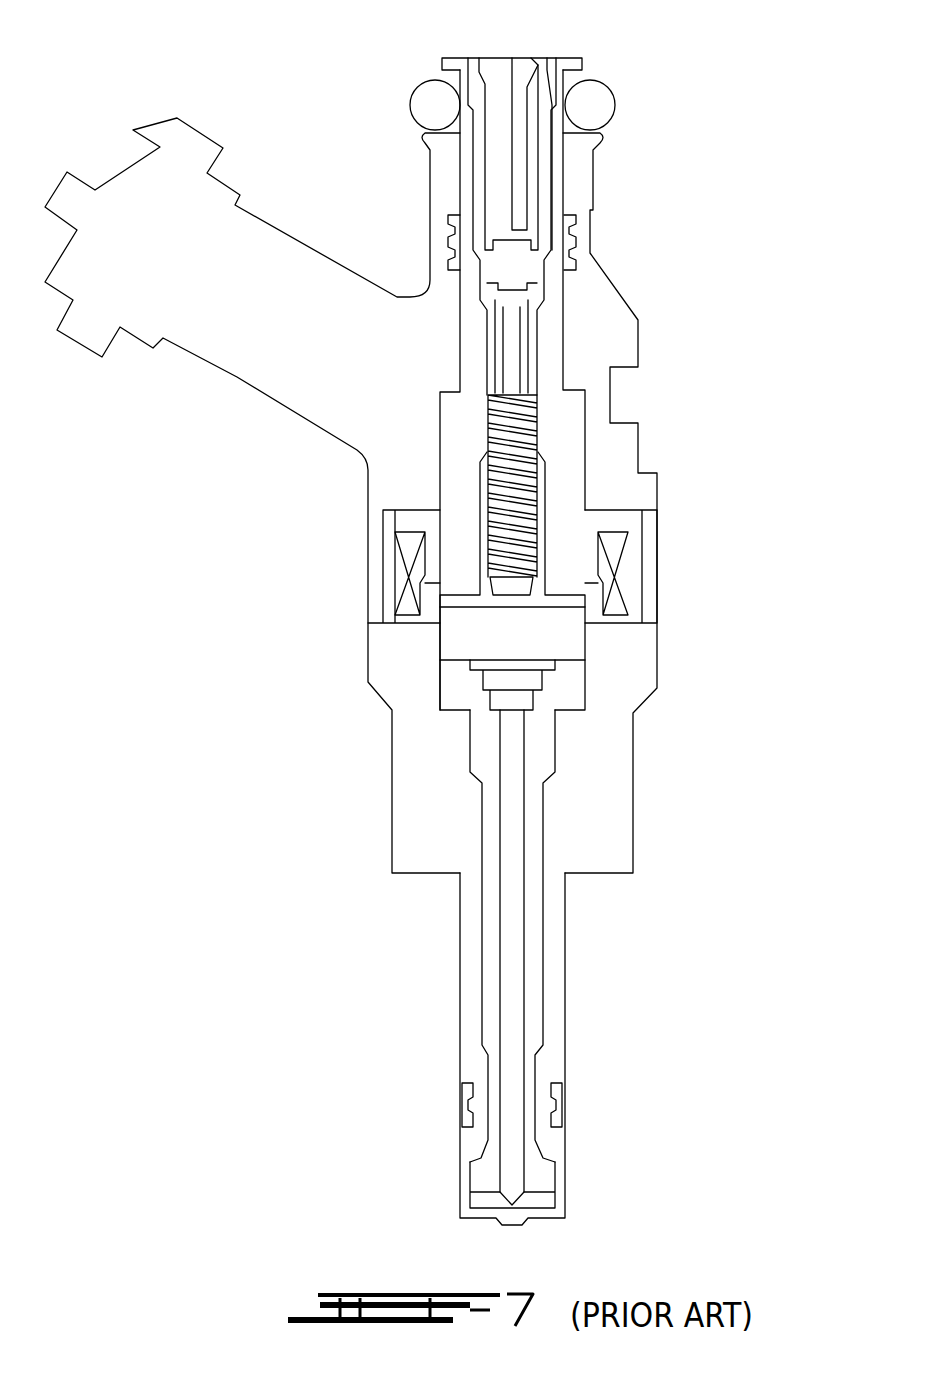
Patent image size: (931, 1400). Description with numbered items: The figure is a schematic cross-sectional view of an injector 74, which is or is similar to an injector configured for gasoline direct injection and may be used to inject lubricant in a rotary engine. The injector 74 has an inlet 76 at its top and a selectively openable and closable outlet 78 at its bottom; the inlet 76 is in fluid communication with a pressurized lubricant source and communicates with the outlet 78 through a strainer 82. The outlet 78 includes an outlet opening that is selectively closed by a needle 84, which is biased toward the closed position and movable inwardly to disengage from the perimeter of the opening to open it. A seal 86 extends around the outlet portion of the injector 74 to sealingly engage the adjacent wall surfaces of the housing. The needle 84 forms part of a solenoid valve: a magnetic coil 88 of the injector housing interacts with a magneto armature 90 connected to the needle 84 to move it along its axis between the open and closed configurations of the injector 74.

The injector 74 is at (692, 190).
The inlet 76 is at (513, 58).
The outlet 78 is at (568, 1068).
The strainer 82 is at (520, 122).
The needle 84 is at (512, 938).
The seal 86 is at (467, 1112).
The magnetic coil 88 is at (408, 543).
The magneto armature 90 is at (513, 633).